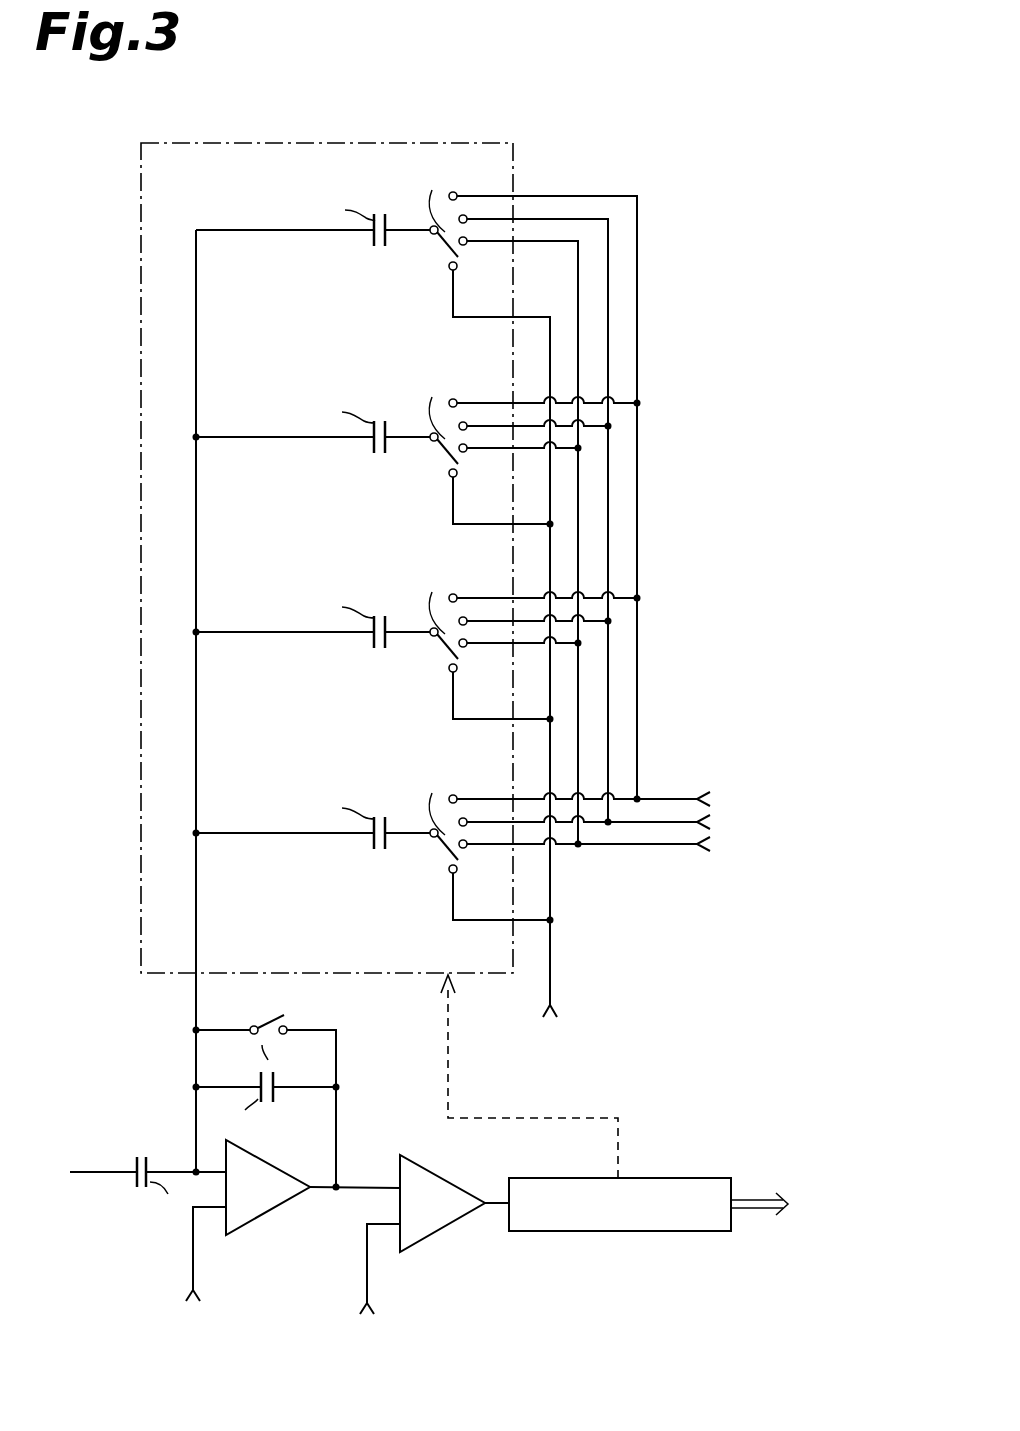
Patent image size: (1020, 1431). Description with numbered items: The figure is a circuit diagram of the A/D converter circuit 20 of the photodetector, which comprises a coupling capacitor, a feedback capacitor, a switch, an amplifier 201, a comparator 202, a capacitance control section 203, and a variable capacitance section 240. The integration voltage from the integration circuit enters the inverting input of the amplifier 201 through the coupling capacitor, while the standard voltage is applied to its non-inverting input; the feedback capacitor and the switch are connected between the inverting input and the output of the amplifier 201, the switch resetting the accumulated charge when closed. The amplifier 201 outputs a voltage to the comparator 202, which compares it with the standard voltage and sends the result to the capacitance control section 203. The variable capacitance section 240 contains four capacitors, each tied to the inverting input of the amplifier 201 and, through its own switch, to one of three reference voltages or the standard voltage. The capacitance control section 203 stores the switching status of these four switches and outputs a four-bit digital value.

The A/D converter circuit 20 is at (562, 140).
The variable capacitance section 240 is at (136, 892).
The amplifier 201 is at (262, 1218).
The comparator 202 is at (440, 1232).
The capacitance control section 203 is at (617, 1232).